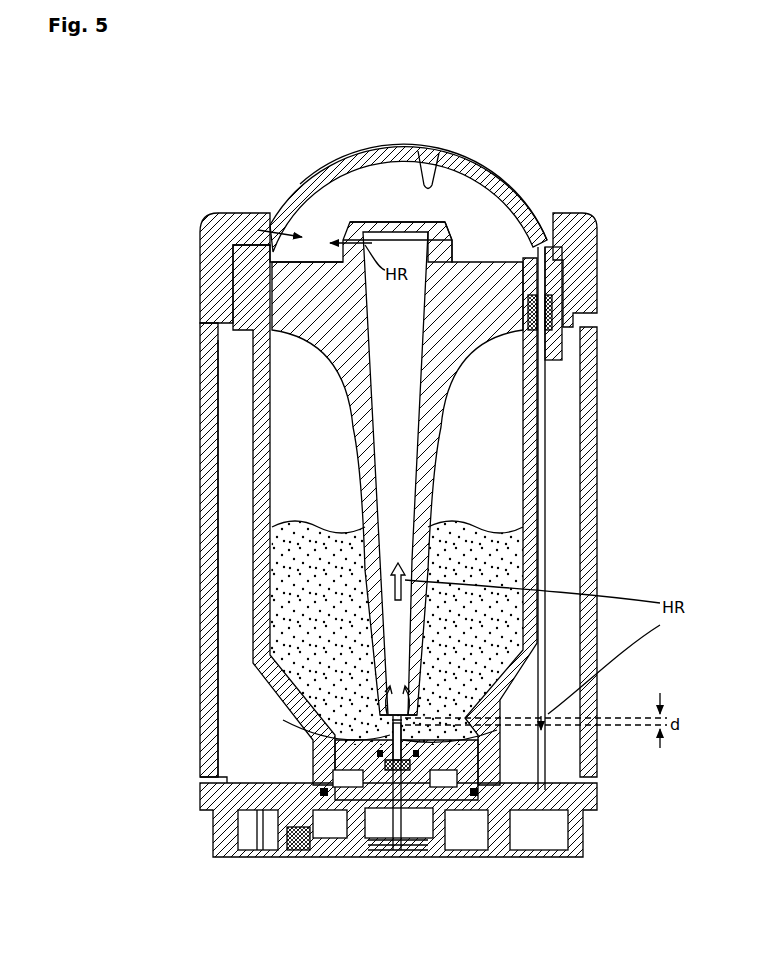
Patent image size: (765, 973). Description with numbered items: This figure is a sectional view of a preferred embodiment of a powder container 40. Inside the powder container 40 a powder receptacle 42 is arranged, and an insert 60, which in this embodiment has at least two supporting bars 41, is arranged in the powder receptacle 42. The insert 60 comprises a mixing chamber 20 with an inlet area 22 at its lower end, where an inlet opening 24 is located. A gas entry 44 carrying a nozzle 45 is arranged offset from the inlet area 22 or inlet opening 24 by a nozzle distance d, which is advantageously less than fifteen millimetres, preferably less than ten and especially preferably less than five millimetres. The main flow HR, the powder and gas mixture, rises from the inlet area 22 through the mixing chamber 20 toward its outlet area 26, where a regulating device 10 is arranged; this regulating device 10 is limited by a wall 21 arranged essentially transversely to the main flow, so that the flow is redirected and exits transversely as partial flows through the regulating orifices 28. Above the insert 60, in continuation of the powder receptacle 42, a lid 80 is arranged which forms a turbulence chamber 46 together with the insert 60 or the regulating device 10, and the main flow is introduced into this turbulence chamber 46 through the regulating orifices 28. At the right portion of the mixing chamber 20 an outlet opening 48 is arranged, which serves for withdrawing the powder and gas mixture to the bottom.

The regulating device 10 is at (240, 228).
The mixing chamber 20 is at (442, 489).
The wall 21 is at (392, 228).
The inlet area 22 is at (429, 692).
The inlet opening 24 is at (350, 731).
The outlet area 26 is at (458, 238).
The regulating orifice 28 is at (295, 233).
The powder container 40 is at (188, 202).
The supporting bar 41 is at (477, 318).
The powder receptacle 42 is at (262, 483).
The gas entry 44 is at (403, 740).
The nozzle 45 is at (385, 717).
The turbulence chamber 46 is at (335, 190).
The outlet opening 48 is at (507, 256).
The insert 60 is at (462, 408).
The lid 80 is at (468, 168).